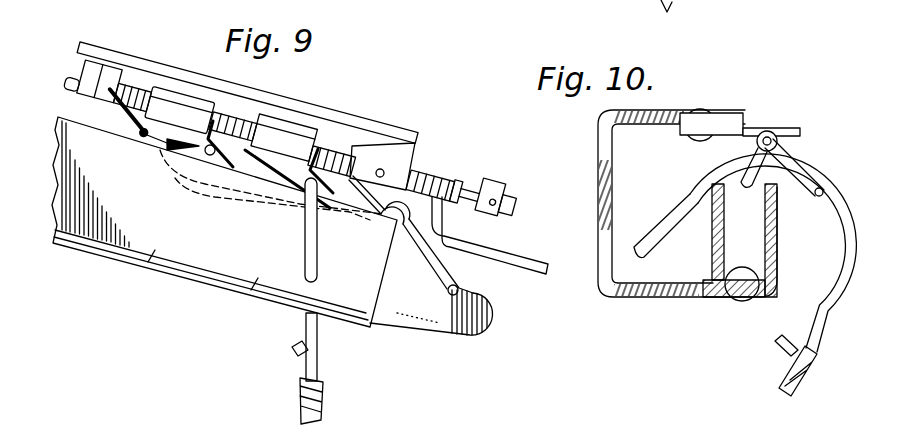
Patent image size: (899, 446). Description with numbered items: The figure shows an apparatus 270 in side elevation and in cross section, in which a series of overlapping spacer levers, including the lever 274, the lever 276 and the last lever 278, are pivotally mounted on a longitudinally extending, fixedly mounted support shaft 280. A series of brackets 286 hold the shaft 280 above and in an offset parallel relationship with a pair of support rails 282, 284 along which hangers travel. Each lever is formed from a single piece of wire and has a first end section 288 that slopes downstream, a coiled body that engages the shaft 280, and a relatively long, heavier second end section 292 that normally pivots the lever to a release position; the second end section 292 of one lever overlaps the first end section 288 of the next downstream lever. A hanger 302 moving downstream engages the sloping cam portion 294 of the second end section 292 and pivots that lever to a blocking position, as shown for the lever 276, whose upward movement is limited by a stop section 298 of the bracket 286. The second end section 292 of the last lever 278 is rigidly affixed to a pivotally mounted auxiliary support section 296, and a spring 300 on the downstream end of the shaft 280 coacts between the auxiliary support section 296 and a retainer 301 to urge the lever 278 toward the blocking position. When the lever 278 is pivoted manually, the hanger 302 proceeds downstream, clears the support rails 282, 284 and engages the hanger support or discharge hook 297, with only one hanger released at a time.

In FIG. 9, the apparatus 270 is at (203, 294).
In FIG. 10, the apparatus 270 is at (750, 108).
In FIG. 9, the lever 274 is at (157, 46).
In FIG. 9, the lever 276 is at (258, 118).
In FIG. 10, the lever 276 is at (772, 123).
In FIG. 9, the last lever 278 is at (356, 150).
In FIG. 9, the support shaft 280 is at (70, 86).
In FIG. 10, the support shaft 280 is at (783, 158).
In FIG. 9, the support rail 282 is at (157, 237).
In FIG. 10, the support rail 282 is at (715, 242).
In FIG. 10, the support rail 284 is at (763, 280).
In FIG. 10, the bracket 286 is at (606, 122).
In FIG. 9, the first end section 288 is at (233, 114).
In FIG. 10, the first end section 288 is at (747, 148).
In FIG. 9, the second end section 292 is at (198, 184).
In FIG. 10, the second end section 292 is at (822, 189).
In FIG. 9, the cam portion 294 is at (157, 150).
In FIG. 9, the auxiliary support section 296 is at (436, 175).
In FIG. 9, the discharge hook 297 is at (466, 328).
In FIG. 10, the stop section 298 is at (786, 134).
In FIG. 9, the spring 300 is at (484, 178).
In FIG. 9, the retainer 301 is at (512, 192).
In FIG. 9, the hanger 302 is at (322, 380).
In FIG. 10, the hanger 302 is at (817, 338).